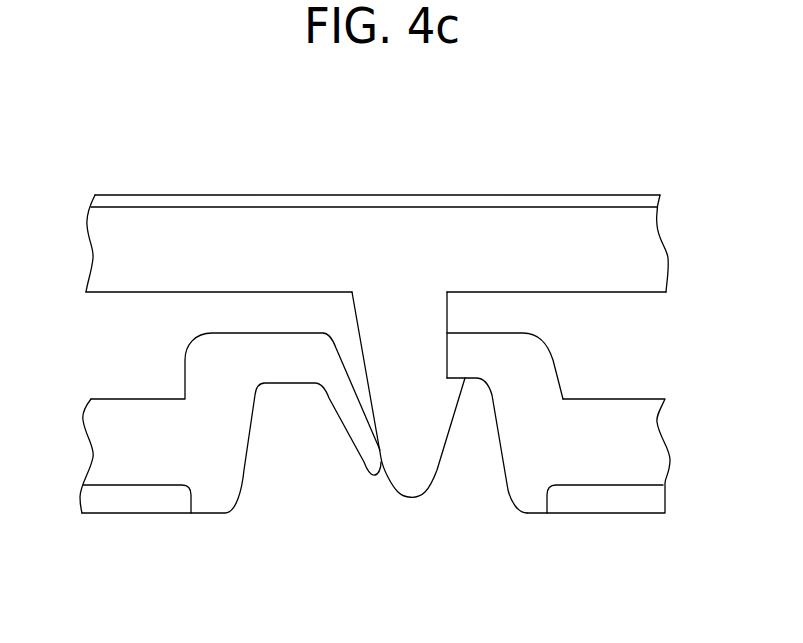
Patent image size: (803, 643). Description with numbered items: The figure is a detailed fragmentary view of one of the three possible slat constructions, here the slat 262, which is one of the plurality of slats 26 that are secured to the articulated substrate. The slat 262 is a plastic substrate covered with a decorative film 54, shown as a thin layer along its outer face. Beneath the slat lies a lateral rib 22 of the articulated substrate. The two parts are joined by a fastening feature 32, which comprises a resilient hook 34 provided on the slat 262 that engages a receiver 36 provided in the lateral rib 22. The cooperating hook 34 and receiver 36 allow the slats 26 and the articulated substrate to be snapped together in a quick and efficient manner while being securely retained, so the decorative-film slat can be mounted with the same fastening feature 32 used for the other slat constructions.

The lateral rib 22 is at (128, 418).
The slat 262 is at (397, 207).
The slat 26 is at (600, 240).
The decorative film 54 is at (485, 200).
The receiver 36 is at (447, 355).
The resilient hook 34 is at (417, 432).
The fastening feature 32 is at (432, 511).